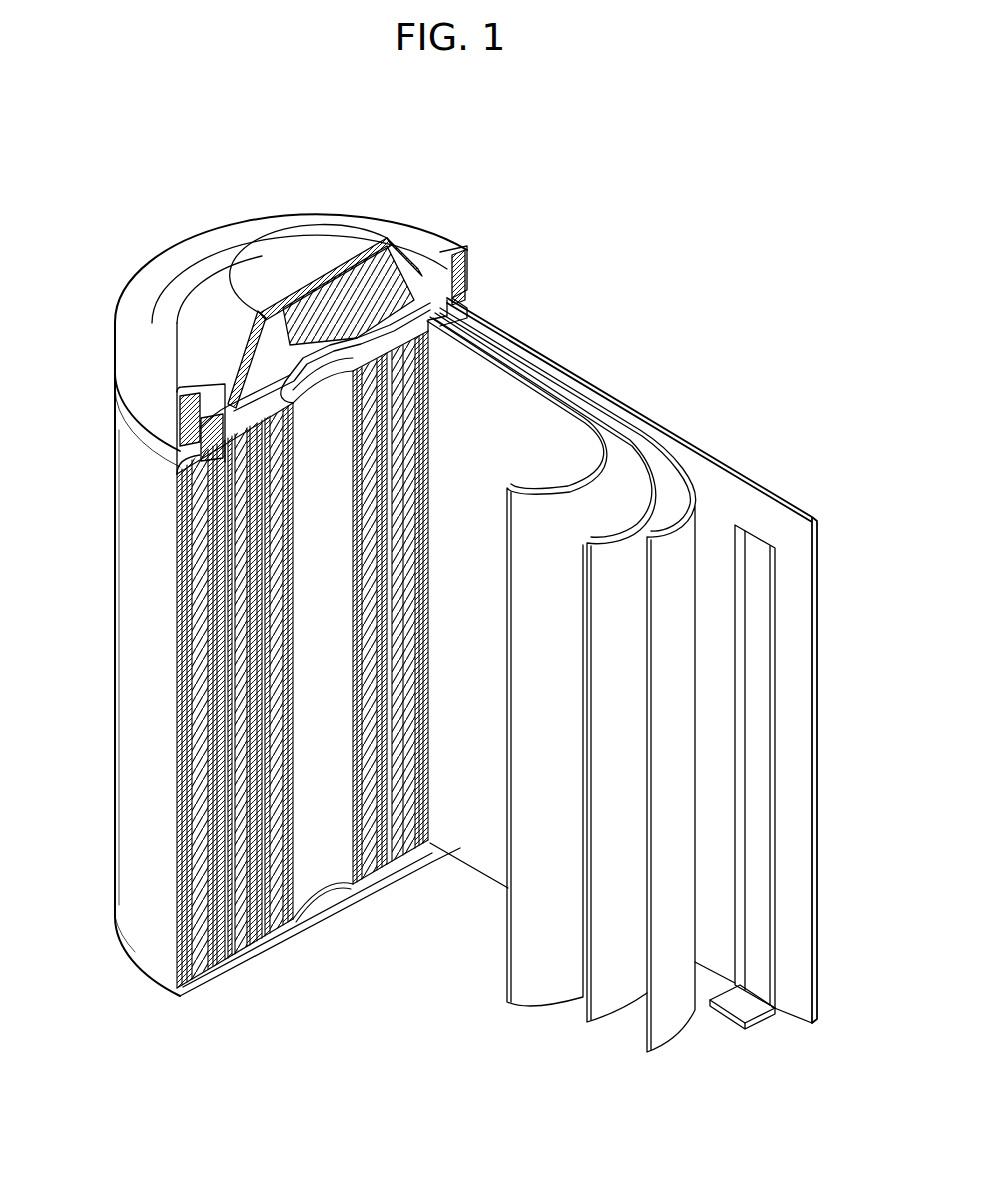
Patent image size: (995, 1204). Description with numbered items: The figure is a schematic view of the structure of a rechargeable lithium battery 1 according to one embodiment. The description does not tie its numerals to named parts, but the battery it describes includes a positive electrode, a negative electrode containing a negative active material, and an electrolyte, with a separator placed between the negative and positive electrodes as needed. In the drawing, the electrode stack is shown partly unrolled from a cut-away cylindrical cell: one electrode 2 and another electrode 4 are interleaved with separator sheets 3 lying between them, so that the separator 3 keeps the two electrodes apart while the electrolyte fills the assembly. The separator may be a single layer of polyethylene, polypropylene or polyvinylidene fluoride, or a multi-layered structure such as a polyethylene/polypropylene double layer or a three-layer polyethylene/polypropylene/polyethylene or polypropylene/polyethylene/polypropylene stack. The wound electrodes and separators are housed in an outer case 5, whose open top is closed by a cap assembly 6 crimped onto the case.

The secondary battery 1 is at (598, 249).
The electrode (negative electrode plate) 2 is at (762, 492).
The separator 3 is at (585, 413).
The electrode (positive electrode plate) 4 is at (628, 462).
The case (can) 5 is at (127, 739).
The cap assembly 6 is at (258, 262).